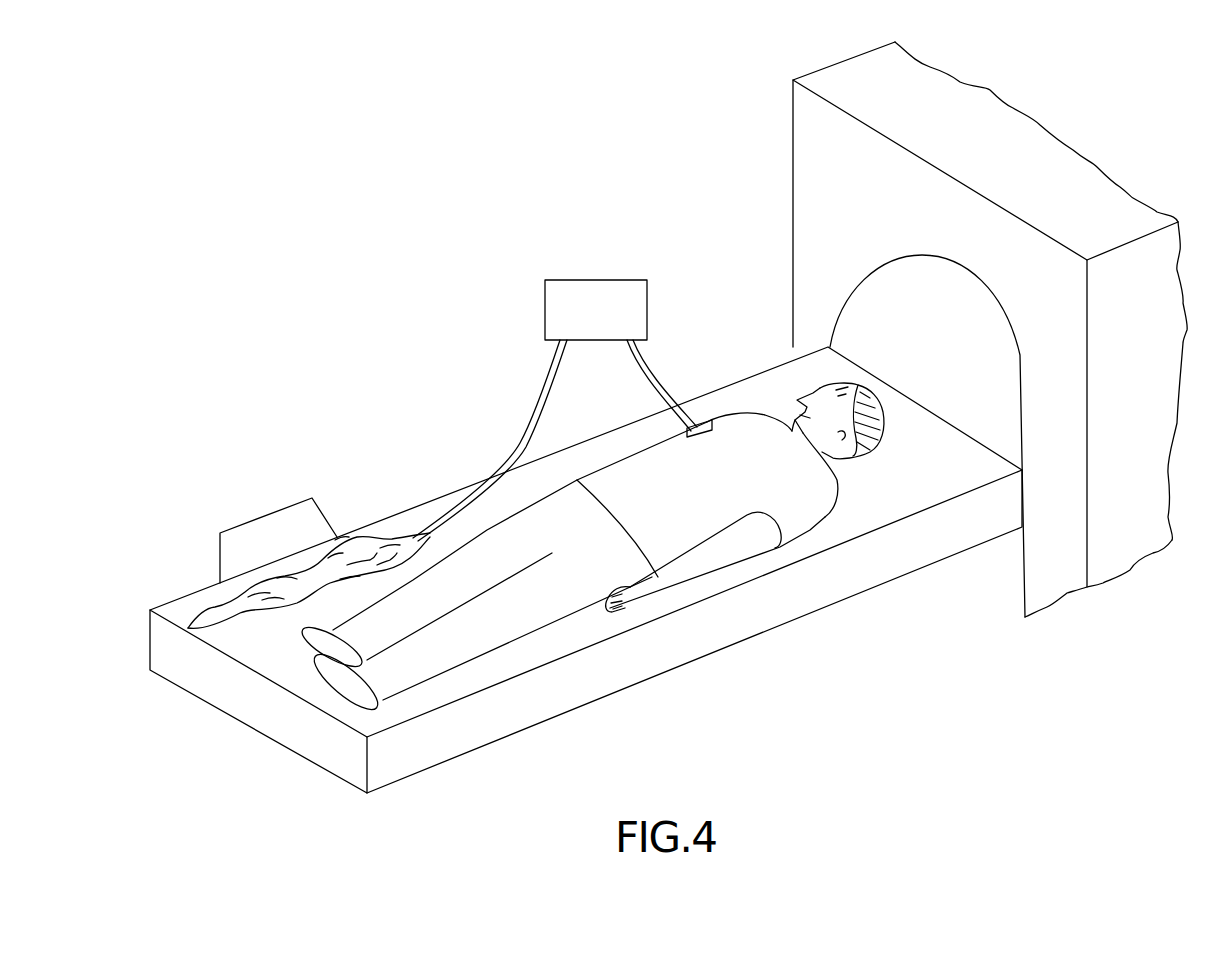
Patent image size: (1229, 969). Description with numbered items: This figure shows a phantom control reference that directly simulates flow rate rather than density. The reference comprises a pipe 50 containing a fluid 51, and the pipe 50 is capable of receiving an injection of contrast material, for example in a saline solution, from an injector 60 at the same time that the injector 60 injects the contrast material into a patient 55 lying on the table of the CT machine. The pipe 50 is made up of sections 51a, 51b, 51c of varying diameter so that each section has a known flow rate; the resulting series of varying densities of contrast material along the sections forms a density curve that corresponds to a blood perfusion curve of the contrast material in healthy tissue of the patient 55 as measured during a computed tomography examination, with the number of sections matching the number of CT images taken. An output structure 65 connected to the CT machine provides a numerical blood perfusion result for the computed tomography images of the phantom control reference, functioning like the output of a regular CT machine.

The pipe 50 is at (222, 627).
The fluid 51 is at (355, 545).
The pipe section 51a is at (277, 598).
The pipe section 51b is at (347, 577).
The pipe section 51c is at (388, 545).
The patient 55 is at (800, 508).
The injector 60 is at (647, 320).
The output structure 65 is at (268, 527).